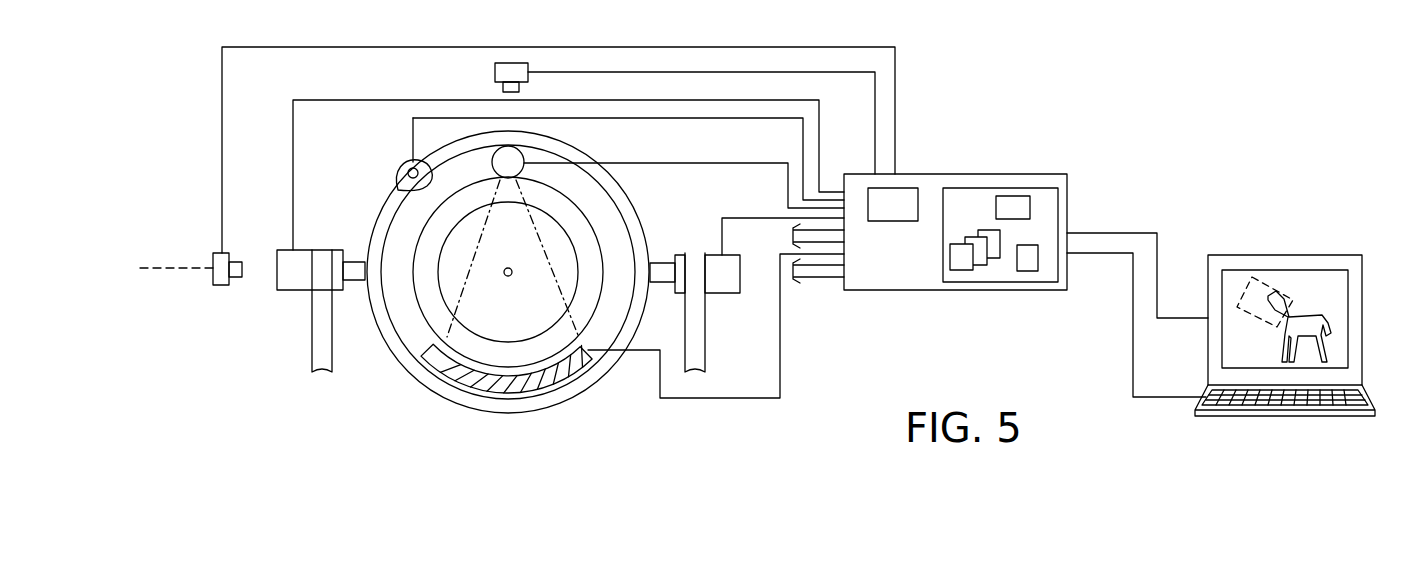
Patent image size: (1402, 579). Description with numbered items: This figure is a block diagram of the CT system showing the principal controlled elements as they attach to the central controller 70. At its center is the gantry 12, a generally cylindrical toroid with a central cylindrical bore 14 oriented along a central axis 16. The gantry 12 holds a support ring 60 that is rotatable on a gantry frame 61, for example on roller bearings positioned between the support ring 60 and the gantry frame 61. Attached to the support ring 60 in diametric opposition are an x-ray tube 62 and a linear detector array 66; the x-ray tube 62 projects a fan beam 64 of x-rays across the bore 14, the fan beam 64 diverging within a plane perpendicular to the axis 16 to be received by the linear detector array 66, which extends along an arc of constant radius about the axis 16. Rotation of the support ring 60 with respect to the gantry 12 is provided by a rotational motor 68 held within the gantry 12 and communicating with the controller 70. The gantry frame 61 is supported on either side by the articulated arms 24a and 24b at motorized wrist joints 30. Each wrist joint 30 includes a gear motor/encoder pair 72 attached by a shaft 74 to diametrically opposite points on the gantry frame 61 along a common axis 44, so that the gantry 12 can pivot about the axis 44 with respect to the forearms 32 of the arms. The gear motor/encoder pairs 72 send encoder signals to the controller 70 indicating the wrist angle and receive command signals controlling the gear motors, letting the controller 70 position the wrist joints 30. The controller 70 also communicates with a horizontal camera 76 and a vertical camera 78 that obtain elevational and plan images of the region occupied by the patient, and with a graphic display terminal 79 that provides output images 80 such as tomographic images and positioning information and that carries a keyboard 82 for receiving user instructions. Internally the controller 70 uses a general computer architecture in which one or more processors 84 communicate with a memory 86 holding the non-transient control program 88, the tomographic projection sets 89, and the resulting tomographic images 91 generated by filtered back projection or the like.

The gantry 12 is at (376, 332).
The central cylindrical bore 14 is at (553, 225).
The central axis 16 is at (510, 280).
The articulated arm 24a is at (285, 365).
The articulated arm 24b is at (722, 350).
The motorized wrist joint 30 is at (278, 298).
The forearm 32 is at (312, 330).
The axis 44 is at (175, 268).
The support ring 60 is at (422, 338).
The gantry frame 61 is at (562, 215).
The x-ray tube 62 is at (508, 162).
The fan beam 64 is at (457, 253).
The linear detector array 66 is at (587, 378).
The rotational motor 68 is at (395, 173).
The central controller 70 is at (1068, 190).
The gear motor/encoder pair 72 is at (285, 260).
The shaft 74 is at (352, 245).
The horizontal camera 76 is at (222, 285).
The vertical camera 78 is at (512, 63).
The graphic display terminal 79 is at (1208, 270).
The output images 80 is at (1243, 345).
The keyboard 82 is at (1272, 402).
The processor 84 is at (897, 208).
The memory 86 is at (1060, 210).
The control program 88 is at (1012, 207).
The tomographic projection sets 89 is at (992, 258).
The tomographic images 91 is at (1027, 260).